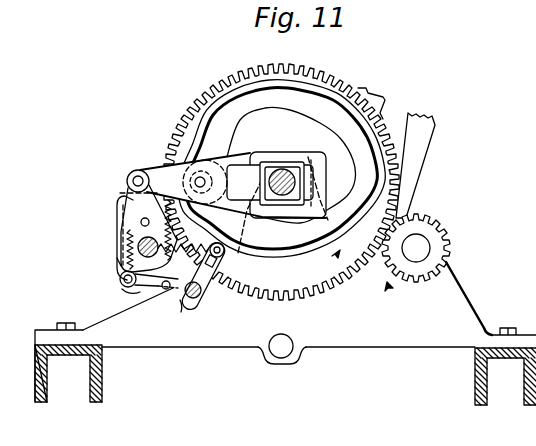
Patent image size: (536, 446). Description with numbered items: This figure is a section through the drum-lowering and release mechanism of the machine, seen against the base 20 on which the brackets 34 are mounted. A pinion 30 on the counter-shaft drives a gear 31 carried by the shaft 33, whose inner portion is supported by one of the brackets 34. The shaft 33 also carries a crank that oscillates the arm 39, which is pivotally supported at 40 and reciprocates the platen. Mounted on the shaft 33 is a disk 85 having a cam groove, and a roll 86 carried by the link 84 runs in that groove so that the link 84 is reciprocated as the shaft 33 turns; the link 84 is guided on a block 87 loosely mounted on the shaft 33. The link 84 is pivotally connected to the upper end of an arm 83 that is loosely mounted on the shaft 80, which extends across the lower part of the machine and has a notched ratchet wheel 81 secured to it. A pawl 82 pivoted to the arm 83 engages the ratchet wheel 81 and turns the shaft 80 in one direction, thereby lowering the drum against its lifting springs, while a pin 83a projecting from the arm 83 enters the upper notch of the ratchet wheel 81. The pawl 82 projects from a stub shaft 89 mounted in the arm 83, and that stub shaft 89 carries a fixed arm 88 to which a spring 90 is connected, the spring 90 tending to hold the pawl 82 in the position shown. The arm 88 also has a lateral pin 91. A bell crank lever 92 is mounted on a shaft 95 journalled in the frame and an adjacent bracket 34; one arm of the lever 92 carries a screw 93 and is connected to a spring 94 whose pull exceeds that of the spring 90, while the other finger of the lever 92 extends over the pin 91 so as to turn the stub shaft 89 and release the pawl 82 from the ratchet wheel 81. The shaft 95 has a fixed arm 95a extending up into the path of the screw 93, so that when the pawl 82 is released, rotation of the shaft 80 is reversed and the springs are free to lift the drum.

The base 20 is at (101, 389).
The pinion 30 is at (443, 246).
The gear 31 is at (237, 74).
The shaft 33 is at (278, 193).
The bracket 34 is at (453, 299).
The arm 39 is at (424, 140).
The pivot 40 is at (294, 358).
The shaft 80 is at (141, 222).
The ratchet wheel 81 is at (118, 243).
The pawl 82 is at (168, 289).
The arm 83 is at (128, 183).
The pin 83a is at (120, 193).
The link 84 is at (150, 170).
The disk 85 is at (318, 88).
The roll 86 is at (207, 175).
The block 87 is at (301, 161).
The arm 88 is at (124, 292).
The stub shaft 89 is at (120, 280).
The spring 90 is at (117, 258).
The pin 91 is at (154, 300).
The bell crank lever 92 is at (214, 287).
The screw 93 is at (223, 266).
The spring 94 is at (190, 248).
The shaft 95 is at (195, 301).
The arm 95a is at (180, 310).